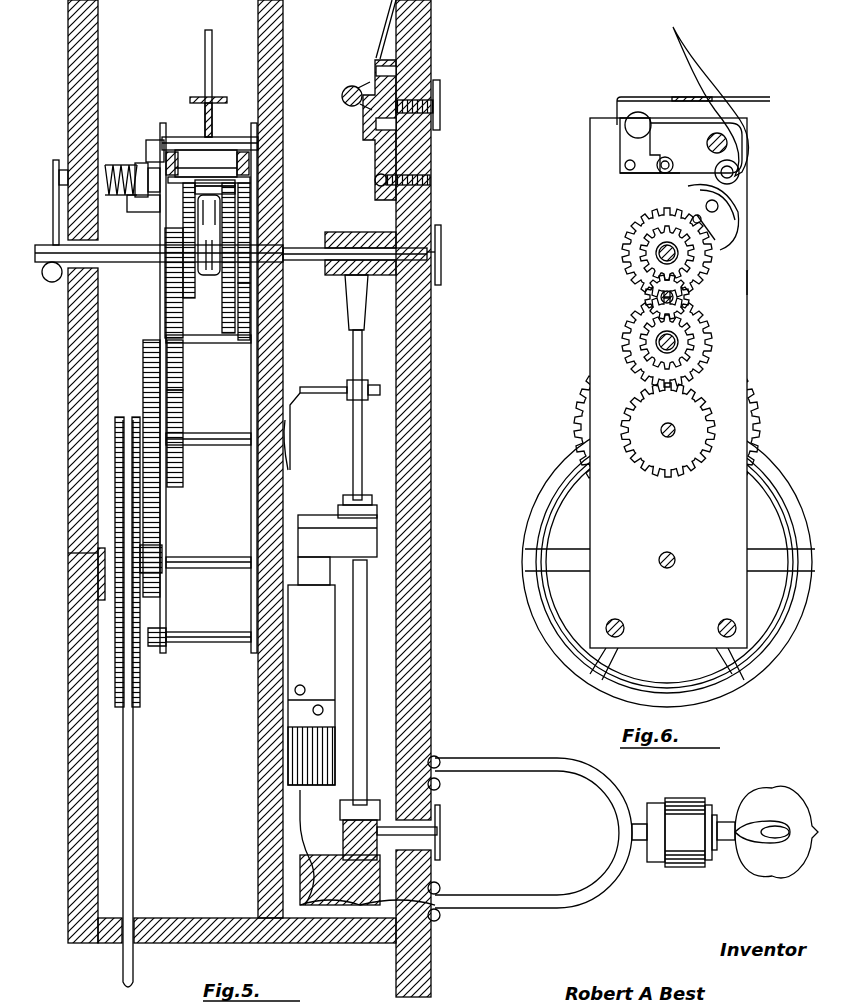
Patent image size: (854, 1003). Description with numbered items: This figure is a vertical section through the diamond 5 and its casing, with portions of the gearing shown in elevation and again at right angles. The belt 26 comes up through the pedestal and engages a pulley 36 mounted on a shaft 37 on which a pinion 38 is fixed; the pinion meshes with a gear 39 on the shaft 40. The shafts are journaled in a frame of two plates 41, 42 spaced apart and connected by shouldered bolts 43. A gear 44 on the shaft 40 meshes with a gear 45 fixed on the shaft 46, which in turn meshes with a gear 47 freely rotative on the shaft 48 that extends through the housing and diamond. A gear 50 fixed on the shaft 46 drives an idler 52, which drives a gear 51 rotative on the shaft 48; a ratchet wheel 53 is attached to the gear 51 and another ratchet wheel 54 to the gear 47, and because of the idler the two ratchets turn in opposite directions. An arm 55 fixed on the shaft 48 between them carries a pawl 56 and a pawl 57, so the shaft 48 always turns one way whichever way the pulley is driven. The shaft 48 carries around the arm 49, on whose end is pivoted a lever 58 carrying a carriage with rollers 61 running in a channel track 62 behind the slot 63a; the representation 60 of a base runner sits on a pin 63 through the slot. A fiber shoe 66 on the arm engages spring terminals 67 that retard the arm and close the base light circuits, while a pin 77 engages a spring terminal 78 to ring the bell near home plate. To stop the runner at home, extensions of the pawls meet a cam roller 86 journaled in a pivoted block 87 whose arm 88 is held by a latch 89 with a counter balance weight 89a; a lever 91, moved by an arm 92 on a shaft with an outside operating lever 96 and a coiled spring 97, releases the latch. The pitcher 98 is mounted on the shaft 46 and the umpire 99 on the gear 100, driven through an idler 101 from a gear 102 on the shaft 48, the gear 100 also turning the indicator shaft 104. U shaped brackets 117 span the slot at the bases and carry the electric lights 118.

In FIG. 5, the diamond 5 is at (431, 384).
In FIG. 5, the belt 26 is at (134, 787).
In FIG. 5, the pulley 36 is at (140, 686).
In FIG. 6, the pulley 36 is at (530, 528).
In FIG. 5, the shaft 37 is at (200, 566).
In FIG. 6, the shaft 37 is at (659, 561).
In FIG. 5, the pinion 38 is at (163, 578).
In FIG. 5, the gear 39 is at (145, 400).
In FIG. 6, the gear 39 is at (580, 442).
In FIG. 5, the shaft 40 is at (188, 470).
In FIG. 6, the shaft 40 is at (660, 431).
In FIG. 5, the plate 41 is at (166, 511).
In FIG. 6, the plate 41 is at (741, 282).
In FIG. 5, the plate 42 is at (252, 511).
In FIG. 5, the shouldered bolt 43 is at (178, 140).
In FIG. 6, the shouldered bolt 43 is at (728, 143).
In FIG. 5, the gear 44 is at (180, 425).
In FIG. 6, the gear 44 is at (640, 419).
In FIG. 5, the gear 45 is at (180, 374).
In FIG. 6, the gear 45 is at (703, 337).
In FIG. 5, the shaft 46 is at (238, 338).
In FIG. 6, the shaft 46 is at (680, 345).
In FIG. 5, the gear 47 is at (172, 266).
In FIG. 5, the shaft 48 is at (48, 282).
In FIG. 6, the shaft 48 is at (676, 253).
In FIG. 5, the arm 49 is at (363, 436).
In FIG. 5, the gear 50 is at (258, 336).
In FIG. 6, the gear 50 is at (648, 343).
In FIG. 5, the gear 51 is at (250, 240).
In FIG. 6, the gear 51 is at (648, 266).
In FIG. 5, the idler 52 is at (250, 292).
In FIG. 6, the idler 52 is at (650, 297).
In FIG. 5, the ratchet wheel 53 is at (196, 226).
In FIG. 6, the ratchet wheel 53 is at (640, 251).
In FIG. 5, the ratchet wheel 54 is at (190, 230).
In FIG. 6, the ratchet wheel 54 is at (626, 234).
In FIG. 5, the arm 55 is at (210, 272).
In FIG. 6, the arm 55 is at (715, 220).
In FIG. 5, the pawl 56 is at (242, 208).
In FIG. 6, the pawl 56 is at (722, 244).
In FIG. 5, the pawl 57 is at (245, 186).
In FIG. 5, the lever 58 is at (368, 663).
In FIG. 5, the representation of a base runner 60 is at (442, 829).
In FIG. 5, the roller 61 is at (347, 836).
In FIG. 5, the channel track 62 is at (355, 870).
In FIG. 5, the pin 63 is at (441, 868).
In FIG. 5, the slot 63a is at (440, 822).
In FIG. 5, the fiber shoe 66 is at (313, 545).
In FIG. 5, the spring terminal 67 is at (311, 685).
In FIG. 5, the pin 77 is at (320, 387).
In FIG. 5, the spring terminal 78 is at (298, 432).
In FIG. 5, the cam roller 86 is at (216, 160).
In FIG. 6, the cam roller 86 is at (670, 160).
In FIG. 5, the pivoted block 87 is at (240, 180).
In FIG. 6, the pivoted block 87 is at (640, 172).
In FIG. 5, the arm 88 is at (203, 98).
In FIG. 6, the arm 88 is at (649, 97).
In FIG. 5, the latch 89 is at (205, 46).
In FIG. 6, the latch 89 is at (710, 84).
In FIG. 6, the counter balance weight 89a is at (637, 113).
In FIG. 5, the lever 91 is at (150, 166).
In FIG. 5, the arm 92 is at (130, 163).
In FIG. 5, the operating lever 96 is at (53, 195).
In FIG. 5, the coiled spring 97 is at (118, 162).
In FIG. 5, the pitcher 98 is at (442, 256).
In FIG. 5, the umpire 99 is at (442, 104).
In FIG. 5, the gear 100 is at (397, 80).
In FIG. 5, the idler 101 is at (397, 166).
In FIG. 5, the gear 102 is at (400, 232).
In FIG. 5, the shaft 104 is at (382, 26).
In FIG. 5, the U shaped bracket 117 is at (542, 772).
In FIG. 5, the electric light 118 is at (753, 865).